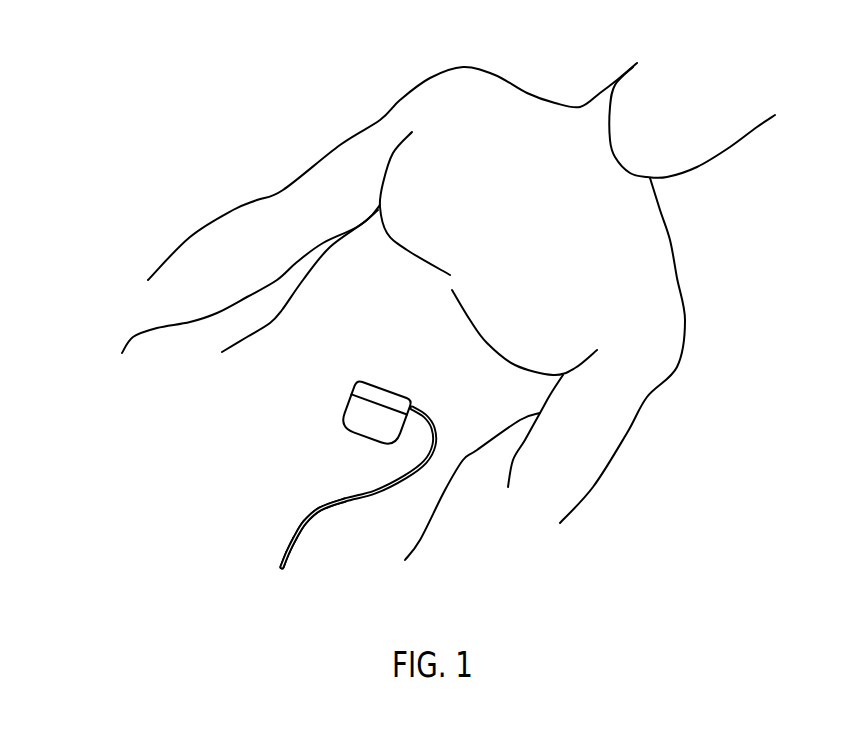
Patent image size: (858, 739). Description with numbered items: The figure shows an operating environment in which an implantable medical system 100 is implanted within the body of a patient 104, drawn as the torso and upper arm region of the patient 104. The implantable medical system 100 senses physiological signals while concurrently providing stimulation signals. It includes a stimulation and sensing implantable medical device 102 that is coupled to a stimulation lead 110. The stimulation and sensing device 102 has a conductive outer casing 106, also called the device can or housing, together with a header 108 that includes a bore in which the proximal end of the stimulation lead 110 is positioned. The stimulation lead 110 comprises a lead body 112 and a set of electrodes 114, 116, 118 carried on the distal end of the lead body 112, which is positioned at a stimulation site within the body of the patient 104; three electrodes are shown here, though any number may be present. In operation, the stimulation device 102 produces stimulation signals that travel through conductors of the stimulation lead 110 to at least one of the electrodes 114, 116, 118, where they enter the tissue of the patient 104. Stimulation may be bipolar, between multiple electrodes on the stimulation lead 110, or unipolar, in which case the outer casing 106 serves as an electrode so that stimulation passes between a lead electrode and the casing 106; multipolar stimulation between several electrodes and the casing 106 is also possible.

The implantable medical system 100 is at (315, 450).
The stimulation and sensing implantable medical device 102 is at (345, 414).
The patient 104 is at (673, 242).
The conductive outer casing 106 is at (376, 414).
The header 108 is at (342, 414).
The stimulation lead 110 is at (262, 535).
The lead body 112 is at (344, 499).
The electrode 114 is at (291, 538).
The electrode 116 is at (285, 547).
The electrode 118 is at (280, 557).